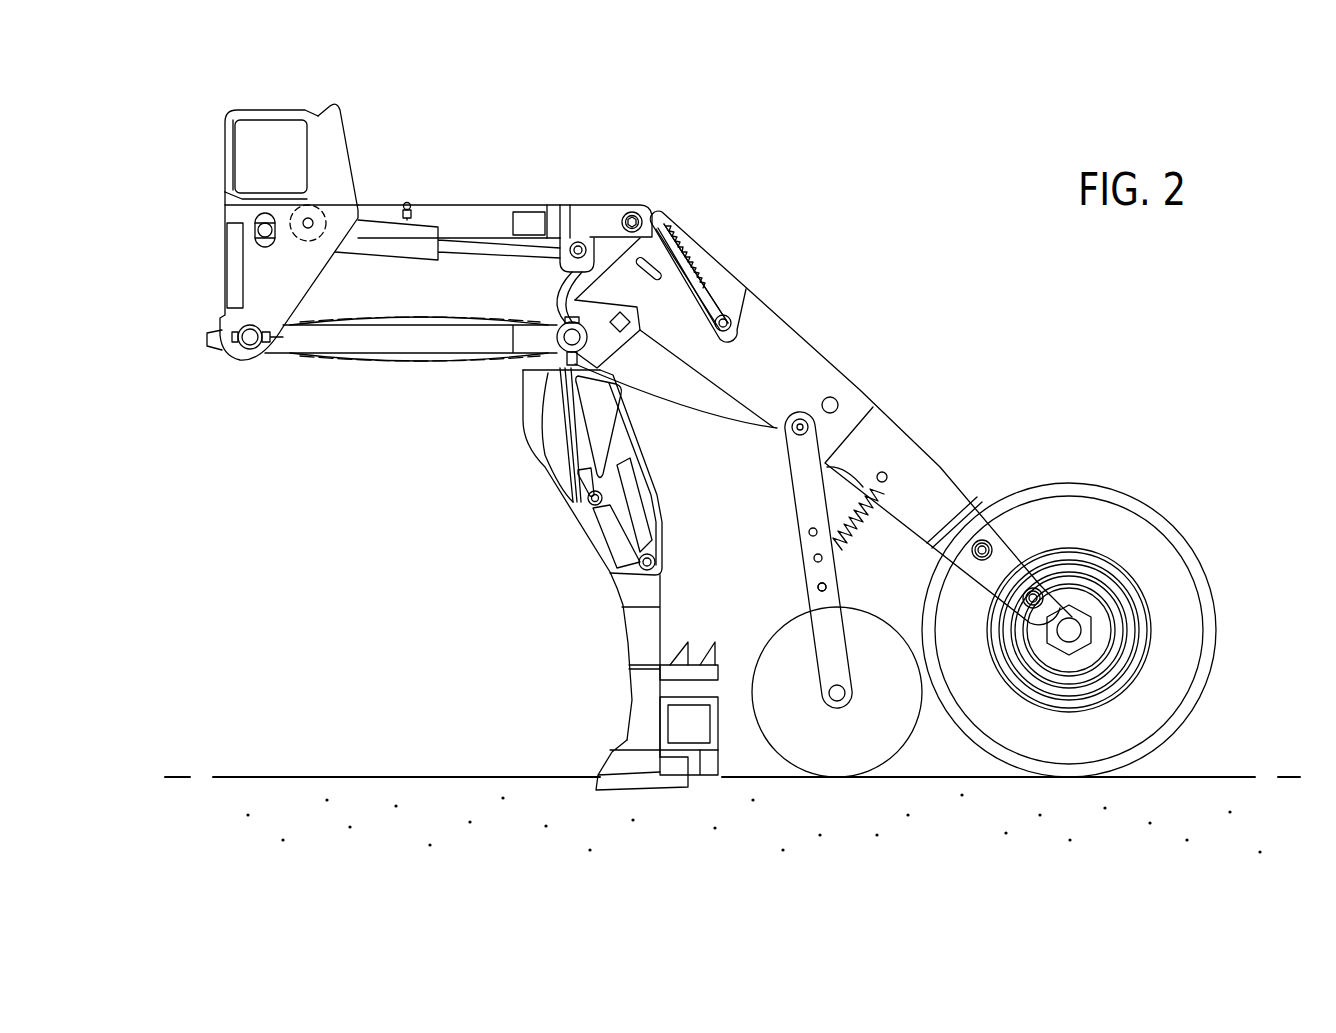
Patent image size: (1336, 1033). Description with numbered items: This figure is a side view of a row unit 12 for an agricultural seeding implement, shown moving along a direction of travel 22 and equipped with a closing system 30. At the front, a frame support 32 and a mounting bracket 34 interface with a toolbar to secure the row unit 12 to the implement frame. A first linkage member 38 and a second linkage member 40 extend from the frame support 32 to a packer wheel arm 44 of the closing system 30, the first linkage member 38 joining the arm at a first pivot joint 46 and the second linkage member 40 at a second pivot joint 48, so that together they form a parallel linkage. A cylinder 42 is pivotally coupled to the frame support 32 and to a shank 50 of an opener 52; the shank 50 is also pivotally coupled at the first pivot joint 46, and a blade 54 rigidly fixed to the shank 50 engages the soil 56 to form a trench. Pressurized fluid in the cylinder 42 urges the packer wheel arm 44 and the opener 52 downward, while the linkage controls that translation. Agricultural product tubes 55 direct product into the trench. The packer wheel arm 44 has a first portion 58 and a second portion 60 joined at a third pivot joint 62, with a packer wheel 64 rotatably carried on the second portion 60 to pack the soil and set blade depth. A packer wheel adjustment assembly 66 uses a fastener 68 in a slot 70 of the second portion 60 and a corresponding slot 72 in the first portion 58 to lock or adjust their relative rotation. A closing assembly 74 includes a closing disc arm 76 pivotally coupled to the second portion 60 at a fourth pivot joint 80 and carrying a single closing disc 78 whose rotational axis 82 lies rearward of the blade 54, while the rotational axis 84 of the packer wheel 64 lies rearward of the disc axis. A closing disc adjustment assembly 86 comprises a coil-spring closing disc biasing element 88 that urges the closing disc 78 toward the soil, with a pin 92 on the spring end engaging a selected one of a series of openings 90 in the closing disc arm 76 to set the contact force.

The row unit 12 is at (737, 157).
The direction of travel 22 is at (310, 505).
The closing system 30 is at (866, 290).
The frame support 32 is at (338, 148).
The mounting bracket 34 is at (276, 110).
The first linkage member 38 is at (370, 355).
The second linkage member 40 is at (472, 205).
The cylinder 42 is at (415, 252).
The packer wheel arm 44 is at (743, 207).
The first pivot joint 46 is at (555, 330).
The second pivot joint 48 is at (628, 213).
The shank 50 is at (643, 470).
The opener 52 is at (545, 487).
The blade 54 is at (607, 771).
The agricultural product tube 55 is at (678, 663).
The soil 56 is at (382, 777).
The first portion 58 is at (700, 397).
The second portion 60 is at (785, 362).
The third pivot joint 62 is at (838, 398).
The packer wheel 64 is at (1140, 503).
The packer wheel adjustment assembly 66 is at (764, 237).
The fastener 68 is at (733, 318).
The slot 70 is at (708, 295).
The slot 72 is at (640, 263).
The closing assembly 74 is at (745, 490).
The closing disc arm 76 is at (805, 483).
The closing disc 78 is at (838, 780).
The fourth pivot joint 80 is at (808, 428).
The rotational axis 82 is at (842, 703).
The rotational axis 84 is at (1072, 628).
The closing disc adjustment assembly 86 is at (900, 520).
The closing disc biasing element 88 is at (870, 518).
The openings 90 is at (818, 587).
The pin 92 is at (826, 587).